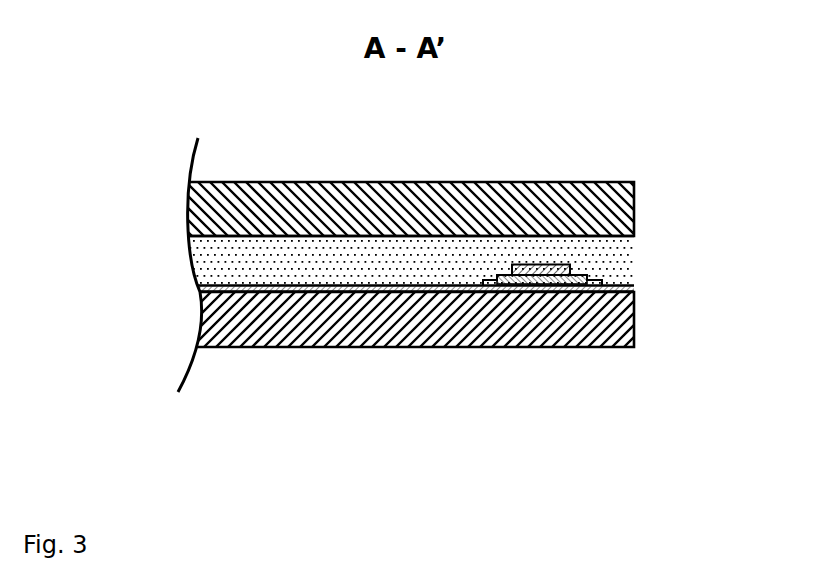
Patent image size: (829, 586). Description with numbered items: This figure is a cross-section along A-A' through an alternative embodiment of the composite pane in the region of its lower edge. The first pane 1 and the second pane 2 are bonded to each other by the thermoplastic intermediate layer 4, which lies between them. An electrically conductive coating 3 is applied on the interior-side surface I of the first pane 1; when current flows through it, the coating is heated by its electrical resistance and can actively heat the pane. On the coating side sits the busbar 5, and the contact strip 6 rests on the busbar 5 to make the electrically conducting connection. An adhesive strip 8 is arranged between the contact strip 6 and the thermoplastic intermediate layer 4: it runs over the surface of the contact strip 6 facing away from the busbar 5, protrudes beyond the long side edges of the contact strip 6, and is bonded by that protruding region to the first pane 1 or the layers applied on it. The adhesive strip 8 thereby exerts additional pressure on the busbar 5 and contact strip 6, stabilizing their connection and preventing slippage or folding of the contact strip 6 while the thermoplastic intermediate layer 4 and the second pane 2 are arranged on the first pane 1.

The first pane 1 is at (607, 332).
The second pane 2 is at (613, 202).
The electrically conductive coating 3 is at (378, 287).
The thermoplastic intermediate layer 4 is at (625, 248).
The busbar 5 is at (600, 282).
The contact strip 6 is at (532, 265).
The adhesive strip 8 is at (585, 277).
The interior-side surface I is at (445, 291).